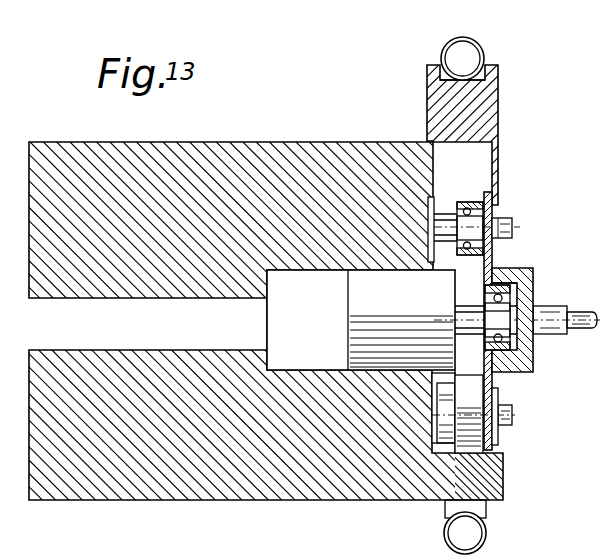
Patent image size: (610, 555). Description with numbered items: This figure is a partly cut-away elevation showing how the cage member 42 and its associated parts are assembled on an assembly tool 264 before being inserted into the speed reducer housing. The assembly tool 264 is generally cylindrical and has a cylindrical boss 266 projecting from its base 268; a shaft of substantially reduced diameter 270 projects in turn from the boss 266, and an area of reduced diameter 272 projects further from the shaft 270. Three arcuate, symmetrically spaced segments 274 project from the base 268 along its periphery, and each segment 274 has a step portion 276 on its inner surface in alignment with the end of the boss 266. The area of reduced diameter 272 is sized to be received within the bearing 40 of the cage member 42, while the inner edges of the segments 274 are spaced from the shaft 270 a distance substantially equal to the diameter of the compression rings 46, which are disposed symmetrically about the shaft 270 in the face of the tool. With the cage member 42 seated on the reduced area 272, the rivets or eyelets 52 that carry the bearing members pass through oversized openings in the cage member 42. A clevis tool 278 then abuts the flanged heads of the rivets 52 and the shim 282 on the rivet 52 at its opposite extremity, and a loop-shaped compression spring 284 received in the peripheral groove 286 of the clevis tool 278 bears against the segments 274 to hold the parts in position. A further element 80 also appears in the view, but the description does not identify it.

The assembly tool 264 is at (272, 141).
The cylindrical boss 266 is at (418, 295).
The shaft of reduced diameter 270 is at (452, 338).
The area of reduced diameter 272 is at (498, 318).
The arcuate segments 274 is at (504, 468).
The step portion 276 is at (462, 455).
The clevis tool 278 is at (499, 123).
The shim 282 is at (496, 203).
The compression spring 284 is at (441, 50).
The peripheral groove 286 is at (481, 82).
The hub 80 is at (430, 221).
The rivets or eyelets 52 is at (504, 218).
The cage member 42 is at (513, 267).
The bearing 40 is at (519, 268).
The base 268 is at (491, 383).
The compression rings 46 is at (494, 438).